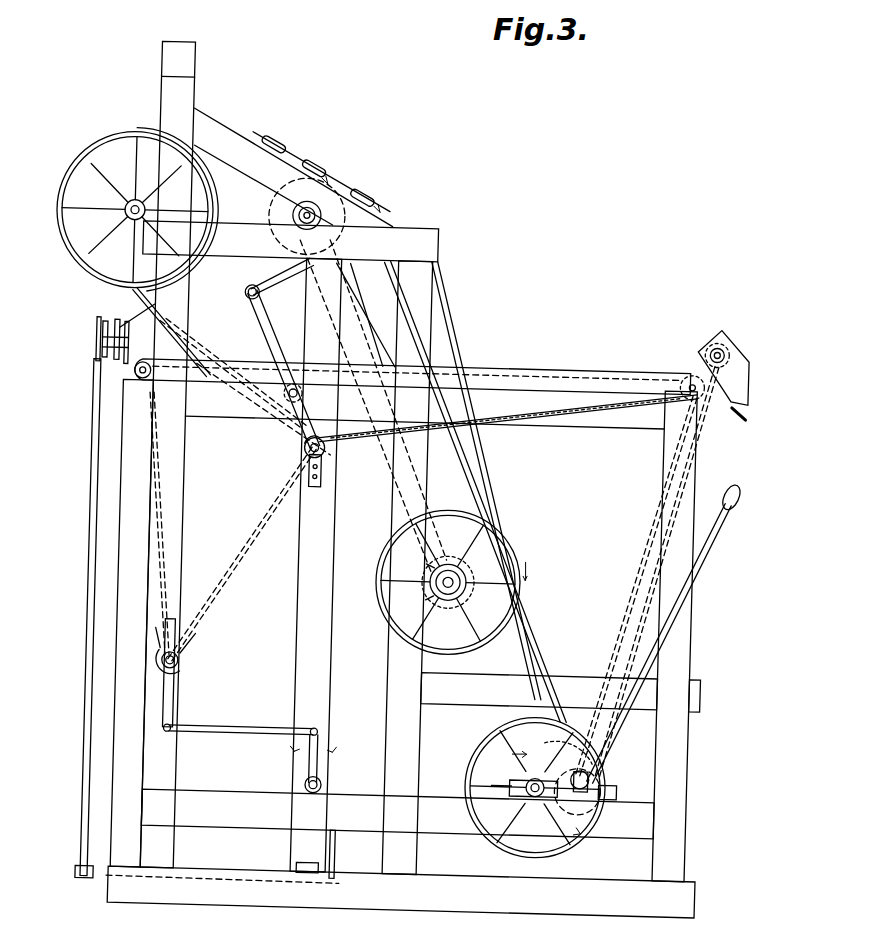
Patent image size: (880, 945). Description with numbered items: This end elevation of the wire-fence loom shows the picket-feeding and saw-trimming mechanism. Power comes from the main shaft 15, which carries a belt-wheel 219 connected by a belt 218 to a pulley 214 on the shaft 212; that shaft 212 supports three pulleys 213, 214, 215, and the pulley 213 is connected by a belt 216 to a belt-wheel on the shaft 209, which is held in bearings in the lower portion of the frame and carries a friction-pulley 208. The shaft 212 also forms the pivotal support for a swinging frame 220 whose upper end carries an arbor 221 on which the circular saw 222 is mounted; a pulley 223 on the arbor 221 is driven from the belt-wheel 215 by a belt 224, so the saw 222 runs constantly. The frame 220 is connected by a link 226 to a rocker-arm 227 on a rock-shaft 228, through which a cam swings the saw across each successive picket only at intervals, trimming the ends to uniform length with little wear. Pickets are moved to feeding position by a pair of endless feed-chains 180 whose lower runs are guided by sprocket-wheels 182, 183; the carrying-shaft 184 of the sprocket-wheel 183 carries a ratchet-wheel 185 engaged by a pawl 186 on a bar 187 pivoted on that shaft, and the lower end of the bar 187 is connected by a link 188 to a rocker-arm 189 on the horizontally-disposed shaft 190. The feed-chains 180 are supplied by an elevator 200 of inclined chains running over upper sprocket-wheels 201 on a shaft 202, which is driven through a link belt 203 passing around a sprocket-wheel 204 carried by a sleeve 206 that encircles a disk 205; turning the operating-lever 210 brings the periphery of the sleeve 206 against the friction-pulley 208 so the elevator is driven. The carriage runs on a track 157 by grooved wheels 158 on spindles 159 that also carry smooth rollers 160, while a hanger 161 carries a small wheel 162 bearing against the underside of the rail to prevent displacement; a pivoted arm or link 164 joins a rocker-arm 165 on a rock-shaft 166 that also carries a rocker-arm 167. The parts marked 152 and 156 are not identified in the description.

The main shaft 15 is at (125, 217).
The pivoted lever beam 152 is at (128, 376).
The guide plate 156 is at (120, 343).
The track 157 is at (108, 339).
The grooved wheels 158 is at (97, 321).
The spindles 159 is at (128, 336).
The smooth rollers 160 is at (166, 320).
The hanger 161 is at (109, 349).
The small wheel 162 is at (124, 353).
The pivoted arm or link 164 is at (103, 331).
The rocker-arm 165 is at (92, 443).
The rock-shaft 166 is at (87, 878).
The rocker-arm 167 is at (335, 853).
The endless feed-chains 180 is at (243, 557).
The sprocket-wheels 182 is at (304, 452).
The sprocket-wheel 183 is at (179, 662).
The carrying-shaft 184 is at (160, 670).
The ratchet-wheel 185 is at (185, 645).
The pawl 186 is at (161, 652).
The bar 187 is at (174, 694).
The link 188 is at (261, 721).
The rocker-arm 189 is at (309, 769).
The horizontally-disposed shaft 190 is at (322, 785).
The elevator 200 is at (744, 420).
The upper sprocket-wheels 201 is at (712, 347).
The shaft 202 is at (709, 357).
The link belt 203 is at (650, 546).
The sprocket-wheel 204 is at (595, 806).
The disk 205 is at (567, 768).
The sleeve 206 is at (592, 780).
The friction-pulley 208 is at (524, 780).
The shaft 209 is at (534, 798).
The operating-lever 210 is at (686, 611).
The shaft 212 is at (434, 592).
The pulley 213 is at (465, 579).
The pulley 214 is at (467, 591).
The pulley 215 is at (516, 608).
The belt 216 is at (463, 737).
The belt 218 is at (109, 283).
The belt-wheel 219 is at (70, 226).
The swinging frame 220 is at (366, 342).
The arbor 221 is at (299, 215).
The circular saw 222 is at (326, 181).
The pulley 223 is at (345, 195).
The belt 224 is at (468, 489).
The link 226 is at (267, 281).
The rocker-arm 227 is at (271, 343).
The rock-shaft 228 is at (276, 426).